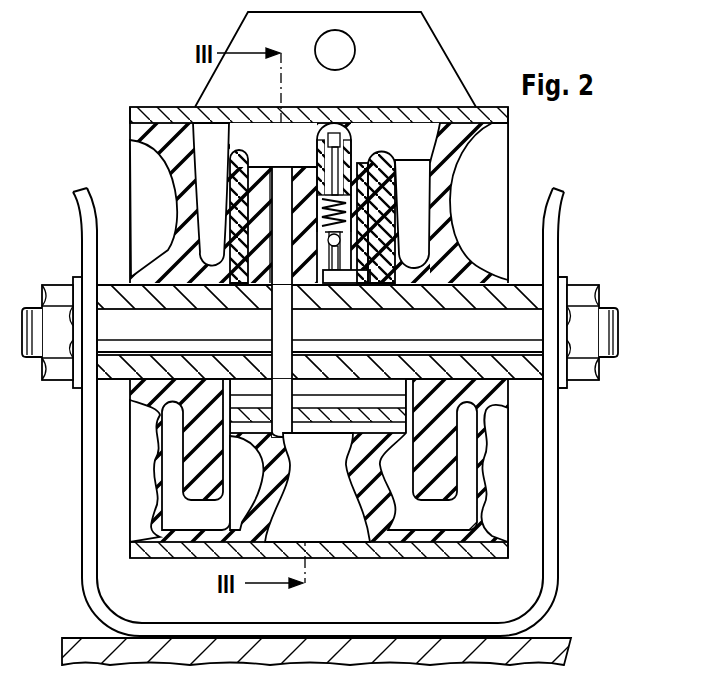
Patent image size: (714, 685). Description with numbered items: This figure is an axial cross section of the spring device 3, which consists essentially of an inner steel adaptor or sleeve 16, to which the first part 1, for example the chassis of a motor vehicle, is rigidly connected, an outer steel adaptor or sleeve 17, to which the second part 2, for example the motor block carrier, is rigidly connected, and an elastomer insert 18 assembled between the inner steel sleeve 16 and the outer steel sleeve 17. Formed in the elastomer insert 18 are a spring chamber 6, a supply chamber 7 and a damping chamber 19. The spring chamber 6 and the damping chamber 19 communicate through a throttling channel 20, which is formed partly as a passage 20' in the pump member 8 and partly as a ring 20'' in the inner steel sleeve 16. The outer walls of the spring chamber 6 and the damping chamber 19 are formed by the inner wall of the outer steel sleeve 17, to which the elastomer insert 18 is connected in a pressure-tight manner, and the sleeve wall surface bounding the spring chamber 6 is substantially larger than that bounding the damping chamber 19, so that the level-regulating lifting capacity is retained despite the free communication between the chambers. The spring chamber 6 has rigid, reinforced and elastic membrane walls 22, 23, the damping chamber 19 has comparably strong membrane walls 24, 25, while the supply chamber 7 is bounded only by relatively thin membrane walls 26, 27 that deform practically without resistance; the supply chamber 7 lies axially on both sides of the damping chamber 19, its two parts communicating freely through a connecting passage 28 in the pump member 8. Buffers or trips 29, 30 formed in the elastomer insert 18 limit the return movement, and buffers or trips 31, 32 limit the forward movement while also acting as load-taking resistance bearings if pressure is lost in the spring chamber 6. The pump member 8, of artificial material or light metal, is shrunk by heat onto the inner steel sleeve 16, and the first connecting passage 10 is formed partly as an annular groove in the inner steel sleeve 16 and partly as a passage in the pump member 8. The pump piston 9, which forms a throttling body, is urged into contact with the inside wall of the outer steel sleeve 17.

The first part 1 is at (551, 447).
The second part 2 is at (422, 33).
The spring device 3 is at (122, 521).
The spring chamber 6 is at (218, 158).
The supply chamber 7 is at (470, 502).
The pump member 8 is at (307, 167).
The pump piston 9 is at (355, 148).
The first connecting passage 10 is at (366, 327).
The inner steel sleeve 16 is at (516, 287).
The outer steel sleeve 17 is at (452, 108).
The elastomer insert 18 is at (495, 215).
The damping chamber 19 is at (346, 543).
The throttling channel 20 is at (215, 302).
The passage 20' is at (320, 328).
The ring 20'' is at (320, 332).
The membrane wall 22 is at (175, 168).
The membrane wall 23 is at (446, 196).
The membrane wall 24 is at (258, 505).
The membrane wall 25 is at (350, 483).
The membrane wall 26 is at (152, 448).
The membrane wall 27 is at (480, 483).
The connecting passage 28 is at (246, 404).
The buffer 29 is at (190, 482).
The buffer 30 is at (447, 508).
The buffer 31 is at (239, 150).
The buffer 32 is at (432, 170).